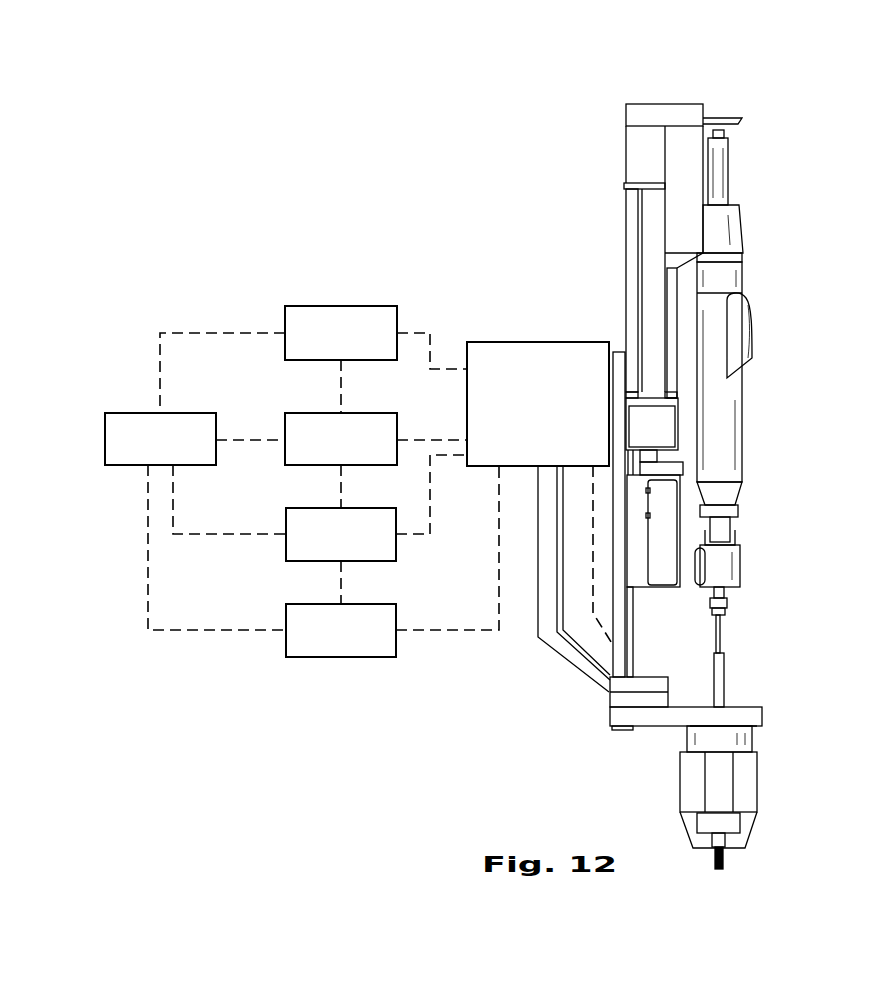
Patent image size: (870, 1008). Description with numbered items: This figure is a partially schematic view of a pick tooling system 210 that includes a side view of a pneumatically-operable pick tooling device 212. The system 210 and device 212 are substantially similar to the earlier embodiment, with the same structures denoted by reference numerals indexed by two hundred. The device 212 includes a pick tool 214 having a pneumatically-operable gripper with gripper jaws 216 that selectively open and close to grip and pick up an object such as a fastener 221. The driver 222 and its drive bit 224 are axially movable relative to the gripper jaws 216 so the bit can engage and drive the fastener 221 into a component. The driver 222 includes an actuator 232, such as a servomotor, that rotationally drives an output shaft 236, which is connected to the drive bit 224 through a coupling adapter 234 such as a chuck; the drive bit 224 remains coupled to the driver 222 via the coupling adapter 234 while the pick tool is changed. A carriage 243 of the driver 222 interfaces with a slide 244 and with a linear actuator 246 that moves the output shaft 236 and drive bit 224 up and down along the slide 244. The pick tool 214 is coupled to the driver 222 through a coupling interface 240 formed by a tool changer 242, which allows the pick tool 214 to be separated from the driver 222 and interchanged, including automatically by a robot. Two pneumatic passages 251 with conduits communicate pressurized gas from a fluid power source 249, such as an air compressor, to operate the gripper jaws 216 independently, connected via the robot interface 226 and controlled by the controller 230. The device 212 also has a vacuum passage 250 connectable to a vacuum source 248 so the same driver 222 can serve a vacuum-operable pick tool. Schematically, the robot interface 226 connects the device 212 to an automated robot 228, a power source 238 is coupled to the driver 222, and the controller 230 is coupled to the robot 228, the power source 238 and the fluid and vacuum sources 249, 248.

The pick tooling system 210 is at (652, 470).
The pick tooling device 212 is at (772, 398).
The pick tool 214 is at (775, 788).
The gripper jaws 216 is at (730, 825).
The fastener 221 is at (725, 860).
The driver 222 is at (642, 289).
The drive bit 224 is at (724, 680).
The robot interface 226 is at (519, 417).
The robot 228 is at (322, 345).
The controller 230 is at (141, 452).
The actuator 232 is at (716, 258).
The coupling adapter 234 is at (727, 604).
The output shaft 236 is at (722, 457).
The power source 238 is at (322, 452).
The coupling interface 240 is at (610, 690).
The tool changer 242 is at (564, 692).
The carriage 243 is at (663, 578).
The slide 244 is at (633, 655).
The actuator 246 is at (652, 300).
The vacuum source 248 is at (322, 643).
The fluid power source 249 is at (322, 547).
The vacuum passage 250 is at (593, 503).
The pneumatic passages 251 is at (557, 558).